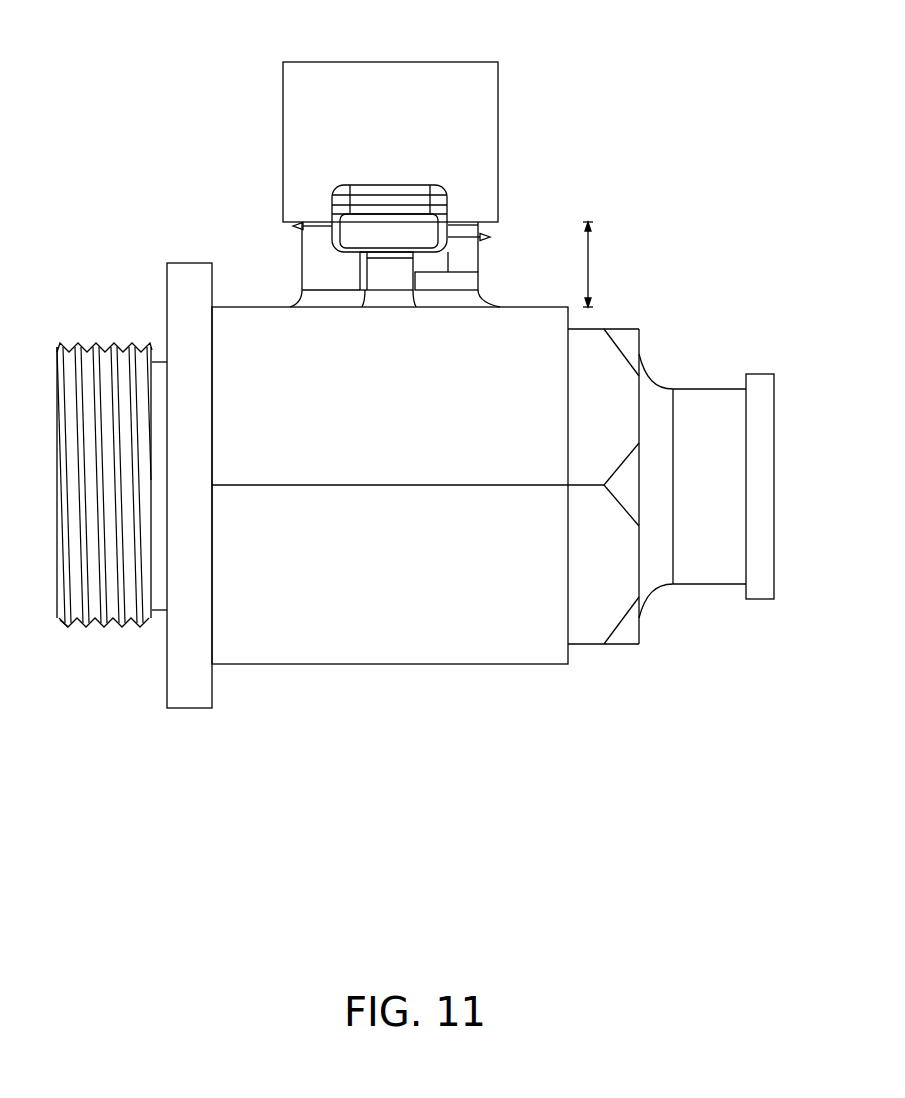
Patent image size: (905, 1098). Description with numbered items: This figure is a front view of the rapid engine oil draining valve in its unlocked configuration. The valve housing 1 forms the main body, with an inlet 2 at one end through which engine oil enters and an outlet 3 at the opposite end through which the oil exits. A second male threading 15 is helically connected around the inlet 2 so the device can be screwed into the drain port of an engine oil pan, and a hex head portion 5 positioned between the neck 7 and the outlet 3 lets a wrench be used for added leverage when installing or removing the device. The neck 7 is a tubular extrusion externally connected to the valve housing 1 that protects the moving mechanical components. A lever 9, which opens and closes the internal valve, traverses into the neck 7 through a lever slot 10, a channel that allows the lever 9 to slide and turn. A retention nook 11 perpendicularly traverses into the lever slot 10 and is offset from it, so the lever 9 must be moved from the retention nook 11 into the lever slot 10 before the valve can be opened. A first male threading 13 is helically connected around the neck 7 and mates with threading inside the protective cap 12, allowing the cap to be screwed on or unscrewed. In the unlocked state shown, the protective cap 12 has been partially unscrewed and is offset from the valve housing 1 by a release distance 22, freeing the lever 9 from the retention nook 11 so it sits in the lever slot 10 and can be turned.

The valve housing 1 is at (383, 688).
The inlet 2 is at (56, 493).
The outlet 3 is at (778, 483).
The hex head portion 5 is at (632, 332).
The neck 7 is at (310, 281).
The lever 9 is at (395, 185).
The lever slot 10 is at (356, 259).
The retention nook 11 is at (477, 283).
The protective cap 12 is at (462, 70).
The first male threading 13 is at (293, 228).
The second male threading 15 is at (66, 629).
The release distance 22 is at (594, 248).